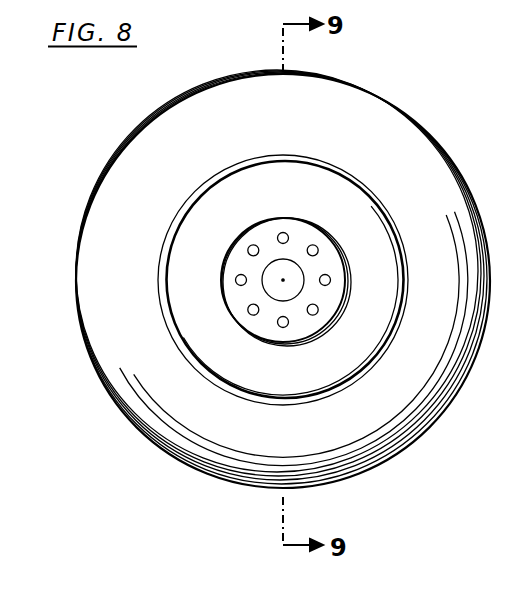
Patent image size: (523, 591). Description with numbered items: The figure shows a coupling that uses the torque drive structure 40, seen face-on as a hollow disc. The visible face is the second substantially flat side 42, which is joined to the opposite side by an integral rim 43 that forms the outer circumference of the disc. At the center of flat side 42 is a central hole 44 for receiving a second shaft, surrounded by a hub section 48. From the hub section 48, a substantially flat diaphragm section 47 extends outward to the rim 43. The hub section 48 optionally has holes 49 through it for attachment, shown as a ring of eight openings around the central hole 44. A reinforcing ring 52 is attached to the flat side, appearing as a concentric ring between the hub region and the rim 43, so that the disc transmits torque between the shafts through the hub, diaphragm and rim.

The structure 40 is at (88, 150).
The second substantially flat side 42 is at (311, 382).
The integral rim 43 is at (396, 452).
The central hole 44 is at (265, 269).
The diaphragm section 47 is at (389, 405).
The hub section 48 is at (333, 295).
The holes 49 is at (280, 236).
The reinforcing ring 52 is at (311, 160).